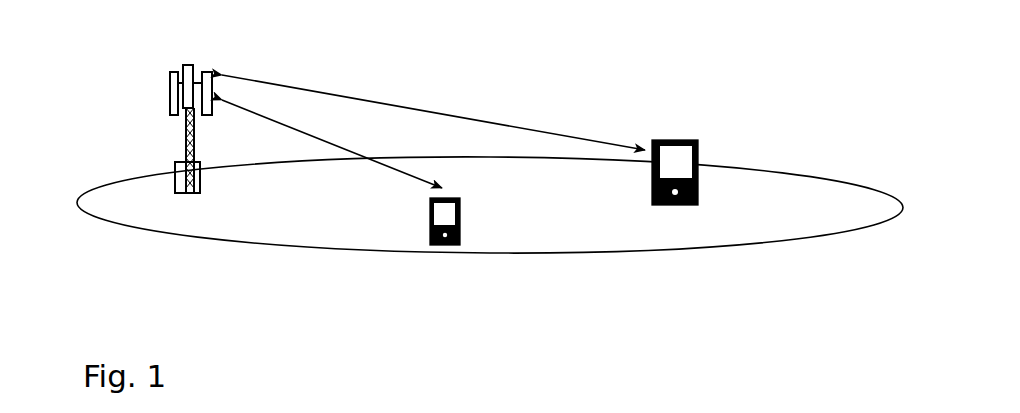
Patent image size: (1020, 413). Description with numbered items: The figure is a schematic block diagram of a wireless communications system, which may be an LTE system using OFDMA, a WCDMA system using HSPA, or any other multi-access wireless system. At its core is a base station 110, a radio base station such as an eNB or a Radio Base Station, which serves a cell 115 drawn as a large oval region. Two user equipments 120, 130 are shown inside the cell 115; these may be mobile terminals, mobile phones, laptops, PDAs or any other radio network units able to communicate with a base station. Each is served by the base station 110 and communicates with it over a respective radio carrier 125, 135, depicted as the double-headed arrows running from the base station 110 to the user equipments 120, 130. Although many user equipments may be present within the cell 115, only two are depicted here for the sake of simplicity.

The base station 110 is at (175, 59).
The cell 115 is at (107, 208).
The user equipment 120 is at (655, 208).
The radio carrier 125 is at (283, 86).
The user equipment 130 is at (428, 231).
The radio carrier 135 is at (350, 151).